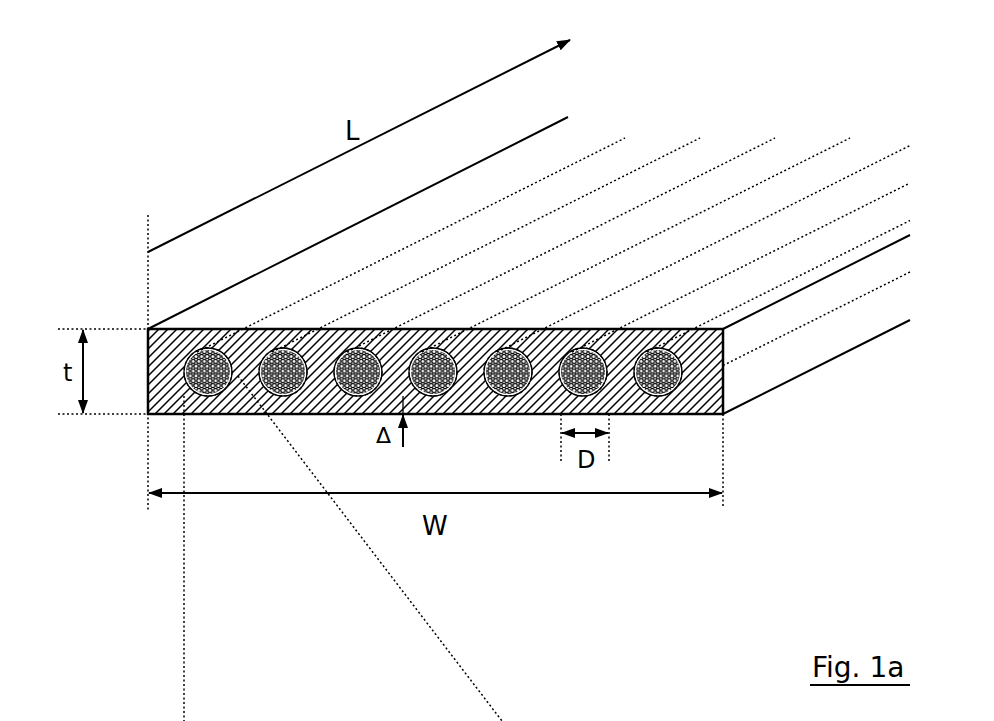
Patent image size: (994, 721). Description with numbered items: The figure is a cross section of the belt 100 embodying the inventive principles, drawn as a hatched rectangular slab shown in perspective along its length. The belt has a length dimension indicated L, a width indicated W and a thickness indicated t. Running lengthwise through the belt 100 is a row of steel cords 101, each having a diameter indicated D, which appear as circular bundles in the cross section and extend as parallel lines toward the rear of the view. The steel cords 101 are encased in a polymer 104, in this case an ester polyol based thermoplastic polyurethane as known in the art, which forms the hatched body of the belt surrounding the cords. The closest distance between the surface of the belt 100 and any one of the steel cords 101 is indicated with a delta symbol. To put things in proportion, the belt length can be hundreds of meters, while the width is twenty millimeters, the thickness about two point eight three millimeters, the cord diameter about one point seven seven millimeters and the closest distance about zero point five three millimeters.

The composite laminate / fibre-reinforced plate 100 is at (225, 157).
The steel cords 101 is at (678, 388).
The polymer 104 is at (176, 388).